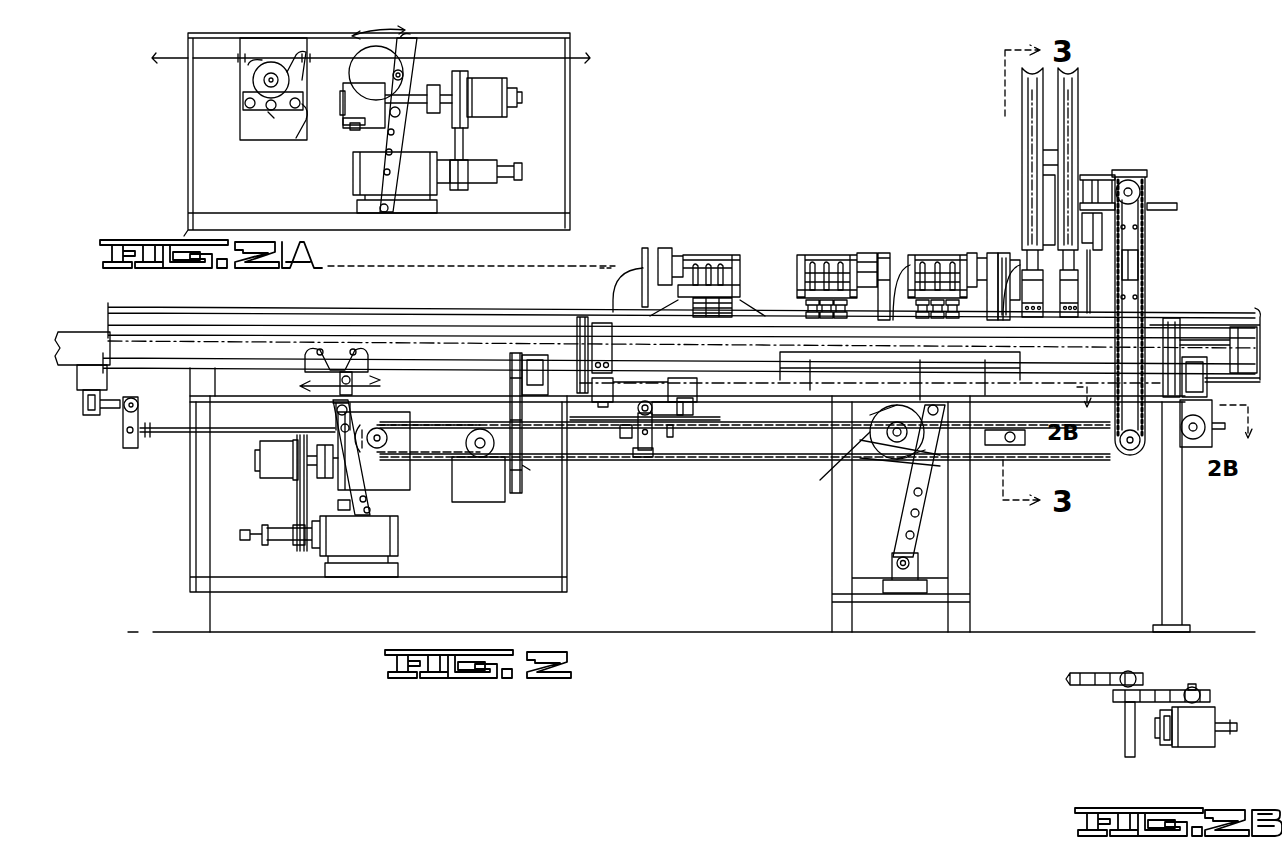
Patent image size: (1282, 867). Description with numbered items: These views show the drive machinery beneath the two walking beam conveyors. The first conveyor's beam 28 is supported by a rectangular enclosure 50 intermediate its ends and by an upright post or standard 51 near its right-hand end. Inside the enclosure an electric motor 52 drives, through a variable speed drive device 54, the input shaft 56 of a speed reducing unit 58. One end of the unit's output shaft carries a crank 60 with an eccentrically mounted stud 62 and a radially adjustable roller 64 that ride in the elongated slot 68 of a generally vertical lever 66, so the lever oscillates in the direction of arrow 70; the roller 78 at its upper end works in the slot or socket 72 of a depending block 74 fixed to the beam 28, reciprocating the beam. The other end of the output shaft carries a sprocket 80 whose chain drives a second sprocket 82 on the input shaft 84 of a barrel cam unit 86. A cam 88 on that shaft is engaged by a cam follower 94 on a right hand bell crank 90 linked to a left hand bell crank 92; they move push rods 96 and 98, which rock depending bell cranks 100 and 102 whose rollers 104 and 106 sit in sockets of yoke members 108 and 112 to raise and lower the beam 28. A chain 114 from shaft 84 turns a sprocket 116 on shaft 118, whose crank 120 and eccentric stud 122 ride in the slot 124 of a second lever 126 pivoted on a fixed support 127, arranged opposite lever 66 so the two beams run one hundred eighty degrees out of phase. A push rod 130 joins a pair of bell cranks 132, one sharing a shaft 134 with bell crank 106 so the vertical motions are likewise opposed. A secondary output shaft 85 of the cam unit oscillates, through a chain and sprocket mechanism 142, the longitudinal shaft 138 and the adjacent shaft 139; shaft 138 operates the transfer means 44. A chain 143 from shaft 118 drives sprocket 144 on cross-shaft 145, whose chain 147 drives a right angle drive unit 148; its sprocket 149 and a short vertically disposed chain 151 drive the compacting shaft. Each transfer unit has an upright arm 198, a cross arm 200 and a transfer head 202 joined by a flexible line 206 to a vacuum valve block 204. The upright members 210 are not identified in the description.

In FIG. 2, the beam 28 is at (82, 348).
In FIG. 2, the additional transfer means 44 is at (712, 245).
In FIG. 2A, the enclosure 50 is at (570, 140).
In FIG. 2, the enclosure 50 is at (567, 515).
In FIG. 2, the upright post or standard 51 is at (1167, 507).
In FIG. 2A, the electric motor 52 is at (355, 170).
In FIG. 2, the electric motor 52 is at (400, 538).
In FIG. 2A, the variable speed drive device 54 is at (492, 118).
In FIG. 2, the variable speed drive device 54 is at (262, 478).
In FIG. 2A, the input shaft 56 is at (432, 73).
In FIG. 2, the input shaft 56 is at (322, 480).
In FIG. 2A, the speed reducing unit 58 is at (343, 120).
In FIG. 2, the speed reducing unit 58 is at (402, 490).
In FIG. 2A, the crank 60 is at (352, 90).
In FIG. 2A, the eccentrically mounted stud 62 is at (370, 66).
In FIG. 2A, the roller 64 is at (418, 112).
In FIG. 2A, the lever 66 is at (372, 175).
In FIG. 2, the lever 66 is at (378, 508).
In FIG. 2A, the elongated slot 68 is at (380, 128).
In FIG. 2A, the arrow 70 is at (372, 40).
In FIG. 2, the arrow 70 is at (332, 388).
In FIG. 2, the slot or socket 72 is at (330, 381).
In FIG. 2, the depending block 74 is at (362, 355).
In FIG. 2, the roller 78 is at (307, 355).
In FIG. 2, the sprocket 80 is at (385, 432).
In FIG. 2, the second sprocket 82 is at (466, 439).
In FIG. 2A, the input shaft 84 is at (262, 72).
In FIG. 2, the input shaft 84 is at (476, 450).
In FIG. 2, the secondary output shaft 85 is at (528, 478).
In FIG. 2A, the barrel cam unit 86 is at (255, 138).
In FIG. 2, the barrel cam unit 86 is at (462, 503).
In FIG. 2A, the cam 88 is at (252, 88).
In FIG. 2A, the right hand bell crank 90 is at (248, 104).
In FIG. 2A, the left hand bell crank 92 is at (292, 112).
In FIG. 2A, the cam follower 94 is at (268, 112).
In FIG. 2A, the push rod 96 is at (180, 62).
In FIG. 2A, the push rod 98 is at (552, 62).
In FIG. 2, the push rod 98 is at (168, 436).
In FIG. 2, the bell crank 100 is at (122, 420).
In FIG. 2, the bell crank 102 is at (632, 455).
In FIG. 2, the roller 104 is at (95, 392).
In FIG. 2, the roller 106 is at (618, 432).
In FIG. 2, the yoke member 108 is at (90, 415).
In FIG. 2, the yoke member 112 is at (590, 395).
In FIG. 2, the chain 114 is at (722, 447).
In FIG. 2, the sprocket 116 is at (852, 472).
In FIG. 2, the shaft 118 is at (900, 455).
In FIG. 2, the crank 120 is at (870, 408).
In FIG. 2, the eccentric stud 122 is at (918, 478).
In FIG. 2, the slot 124 is at (912, 498).
In FIG. 2, the second lever 126 is at (906, 520).
In FIG. 2, the fixed support 127 is at (818, 570).
In FIG. 2, the push rod 130 is at (830, 428).
In FIG. 2, the bell crank 132 is at (655, 452).
In FIG. 2, the shaft 134 is at (645, 400).
In FIG. 2, the oscillating shaft 138 is at (425, 378).
In FIG. 2, the adjacent shaft 139 is at (228, 330).
In FIG. 2, the chain and sprocket mechanism 142 is at (520, 365).
In FIG. 2, the chain 143 is at (1083, 448).
In FIG. 2B, the chain 143 is at (1100, 683).
In FIG. 2B, the sprocket 144 is at (1115, 668).
In FIG. 2B, the cross-shaft 145 is at (1124, 724).
In FIG. 2, the chain 147 is at (1153, 440).
In FIG. 2B, the chain 147 is at (1170, 690).
In FIG. 2, the right angle drive unit 148 is at (1187, 453).
In FIG. 2B, the right angle drive unit 148 is at (1185, 748).
In FIG. 2B, the sprocket 149 is at (1158, 728).
In FIG. 2B, the vertically disposed chain 151 is at (1167, 745).
In FIG. 2, the upright arm or link 198 is at (864, 253).
In FIG. 2, the cross arm 200 is at (885, 258).
In FIG. 2, the transfer head 202 is at (965, 253).
In FIG. 2, the valve body or block 204 is at (880, 358).
In FIG. 2, the flexible line 206 is at (968, 262).
In FIG. 2, the pneumatic cylinders 210 is at (1070, 137).